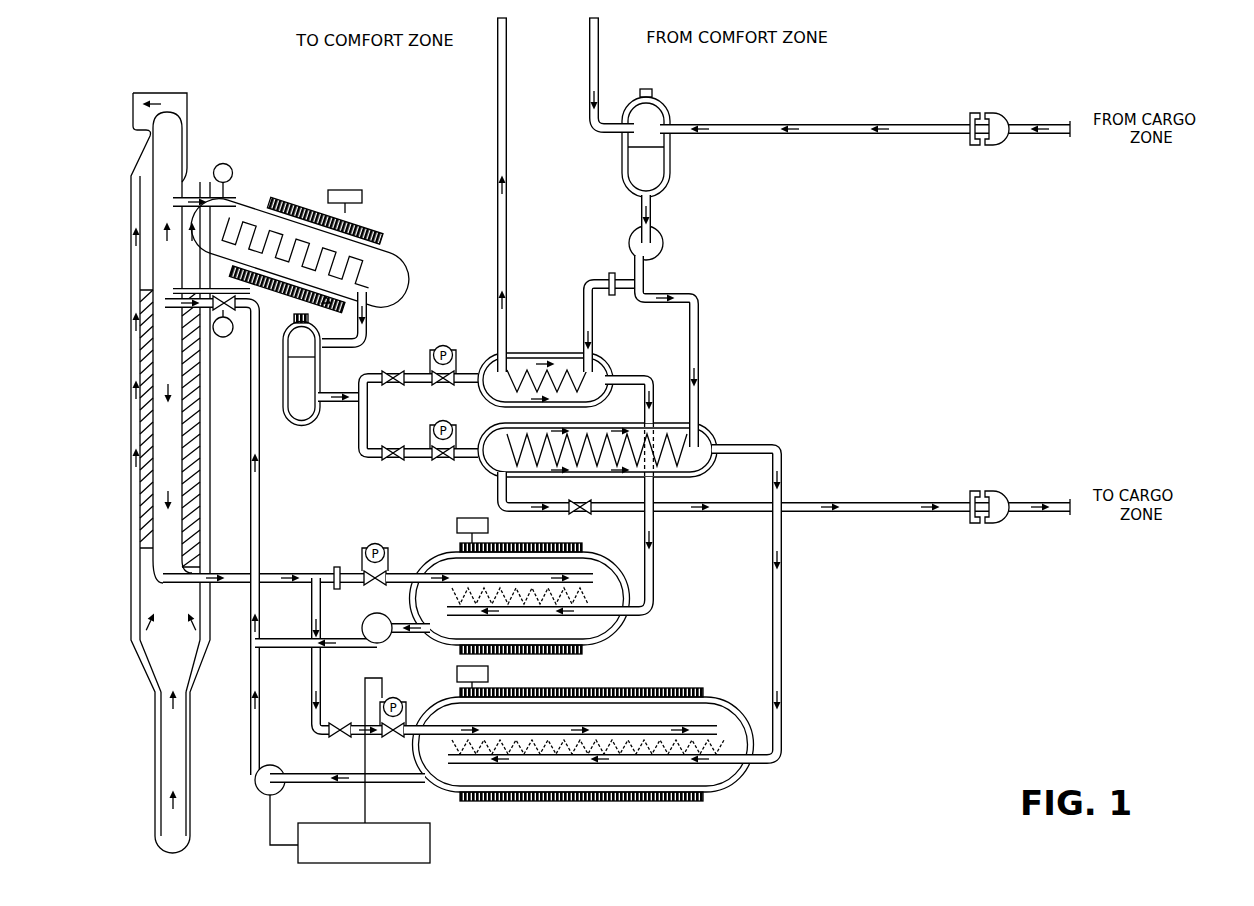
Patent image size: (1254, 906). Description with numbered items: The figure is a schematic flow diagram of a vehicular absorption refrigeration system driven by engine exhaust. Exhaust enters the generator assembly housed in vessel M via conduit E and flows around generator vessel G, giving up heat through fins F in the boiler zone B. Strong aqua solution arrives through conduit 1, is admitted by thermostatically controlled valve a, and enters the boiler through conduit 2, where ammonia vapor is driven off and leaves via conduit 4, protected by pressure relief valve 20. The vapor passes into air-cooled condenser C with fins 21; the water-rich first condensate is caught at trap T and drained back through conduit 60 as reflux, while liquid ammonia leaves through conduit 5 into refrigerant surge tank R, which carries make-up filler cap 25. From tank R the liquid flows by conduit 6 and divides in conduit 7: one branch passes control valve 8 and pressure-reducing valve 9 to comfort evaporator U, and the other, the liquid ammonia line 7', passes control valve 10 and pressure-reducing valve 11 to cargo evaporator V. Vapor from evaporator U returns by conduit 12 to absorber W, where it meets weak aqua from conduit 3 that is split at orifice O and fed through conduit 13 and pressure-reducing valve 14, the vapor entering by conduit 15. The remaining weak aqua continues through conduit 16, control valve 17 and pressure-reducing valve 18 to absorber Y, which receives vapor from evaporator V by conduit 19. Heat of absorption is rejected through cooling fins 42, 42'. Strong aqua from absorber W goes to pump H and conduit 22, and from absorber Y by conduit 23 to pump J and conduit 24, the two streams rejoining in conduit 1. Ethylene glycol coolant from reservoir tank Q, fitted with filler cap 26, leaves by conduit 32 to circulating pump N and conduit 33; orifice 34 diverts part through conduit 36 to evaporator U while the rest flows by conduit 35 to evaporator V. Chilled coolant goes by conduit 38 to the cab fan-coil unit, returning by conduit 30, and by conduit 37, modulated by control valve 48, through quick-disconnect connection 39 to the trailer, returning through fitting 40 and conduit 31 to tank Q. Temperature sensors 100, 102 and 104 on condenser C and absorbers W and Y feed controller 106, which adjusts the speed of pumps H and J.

The conduit 1 is at (260, 497).
The conduit 2 is at (177, 302).
The conduit 3 is at (232, 570).
The conduit 4 is at (242, 198).
The conduit 5 is at (368, 314).
The conduit 6 is at (346, 393).
The conduit 7 is at (420, 394).
The liquid ammonia line 7' is at (401, 458).
The control valve 8 is at (392, 370).
The pressure-reducing valve 9 is at (452, 352).
The control valve 10 is at (392, 445).
The pressure-reducing valve 11 is at (458, 440).
The conduit 12 is at (654, 406).
The conduit 13 is at (357, 552).
The pressure-reducing valve 14 is at (389, 552).
The conduit 15 is at (412, 570).
The conduit 16 is at (312, 662).
The control valve 17 is at (338, 722).
The pressure-reducing valve 18 is at (400, 700).
The conduit 19 is at (782, 554).
The pressure relief valve 20 is at (221, 163).
The fins 21 is at (372, 232).
The conduit 22 is at (292, 636).
The conduit 23 is at (312, 773).
The conduit 24 is at (259, 735).
The make-up filler cap 25 is at (294, 326).
The filler cap 26 is at (652, 93).
The conduit 30 is at (590, 88).
The conduit 31 is at (835, 125).
The conduit 32 is at (653, 207).
The conduit 33 is at (646, 273).
The orifice 34 is at (608, 275).
The conduit 35 is at (700, 330).
The conduit 36 is at (600, 322).
The conduit 37 is at (882, 503).
The conduit 38 is at (497, 98).
The quick-disconnect hose connection 39 is at (986, 522).
The quick-disconnect hose fitting 40 is at (983, 147).
The cooling fins 42 is at (542, 591).
The cooling fins 42' is at (581, 723).
The control valve 48 is at (588, 505).
The conduit 60 is at (255, 293).
The temperature sensor 100 is at (345, 190).
The temperature sensor 102 is at (471, 518).
The temperature sensor 104 is at (490, 676).
The controller 106 is at (432, 840).
The valve a is at (183, 368).
The boiler zone B is at (170, 443).
The condenser C is at (300, 203).
The conduit E is at (158, 756).
The fins F is at (148, 428).
The generator vessel G is at (150, 498).
The pump H is at (365, 618).
The pump J is at (278, 767).
The vessel M is at (130, 590).
The coolant circulating pump N is at (665, 244).
The orifice O is at (333, 568).
The coolant reservoir tank Q is at (622, 165).
The refrigerant surge tank R is at (285, 382).
The trap T is at (328, 305).
The evaporator U is at (539, 345).
The evaporator V is at (598, 415).
The absorber W is at (532, 548).
The absorber Y is at (628, 690).